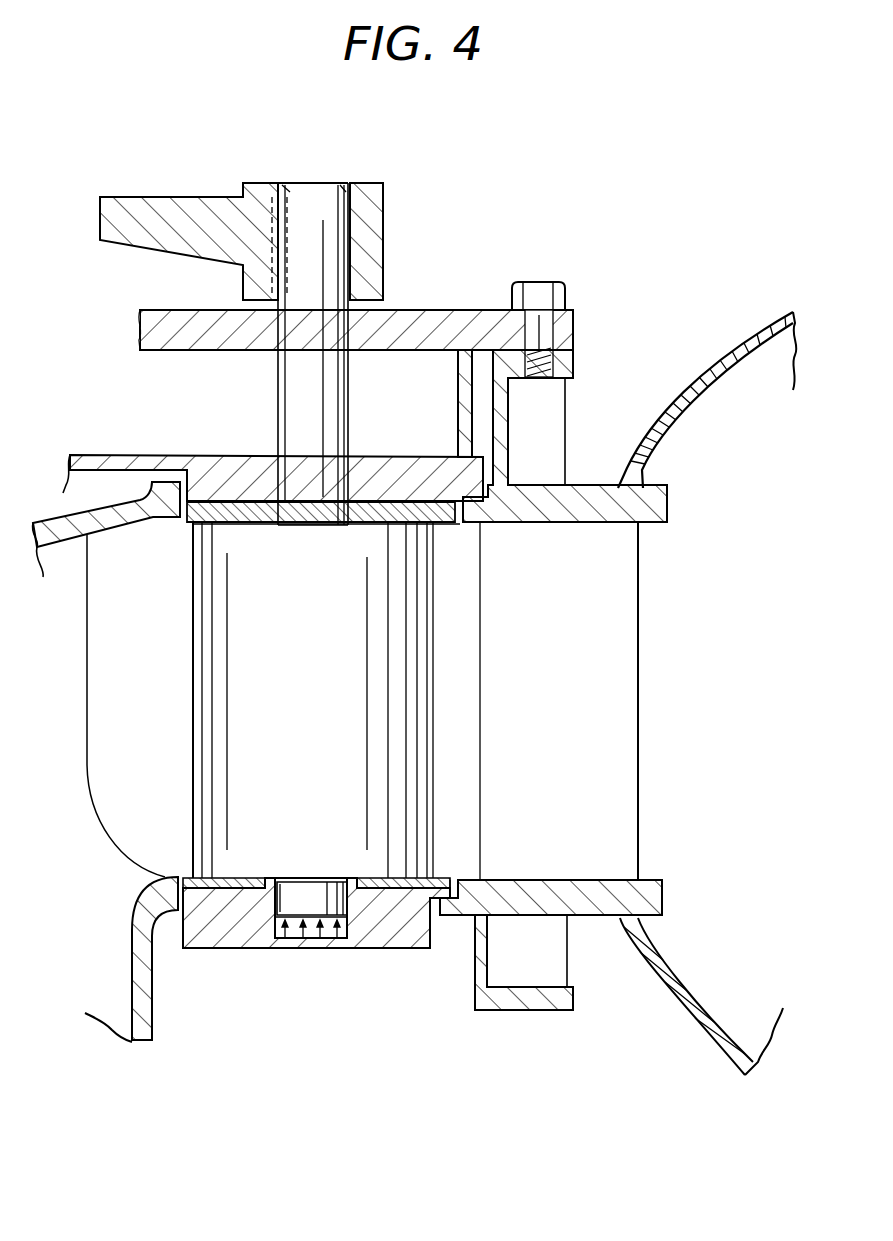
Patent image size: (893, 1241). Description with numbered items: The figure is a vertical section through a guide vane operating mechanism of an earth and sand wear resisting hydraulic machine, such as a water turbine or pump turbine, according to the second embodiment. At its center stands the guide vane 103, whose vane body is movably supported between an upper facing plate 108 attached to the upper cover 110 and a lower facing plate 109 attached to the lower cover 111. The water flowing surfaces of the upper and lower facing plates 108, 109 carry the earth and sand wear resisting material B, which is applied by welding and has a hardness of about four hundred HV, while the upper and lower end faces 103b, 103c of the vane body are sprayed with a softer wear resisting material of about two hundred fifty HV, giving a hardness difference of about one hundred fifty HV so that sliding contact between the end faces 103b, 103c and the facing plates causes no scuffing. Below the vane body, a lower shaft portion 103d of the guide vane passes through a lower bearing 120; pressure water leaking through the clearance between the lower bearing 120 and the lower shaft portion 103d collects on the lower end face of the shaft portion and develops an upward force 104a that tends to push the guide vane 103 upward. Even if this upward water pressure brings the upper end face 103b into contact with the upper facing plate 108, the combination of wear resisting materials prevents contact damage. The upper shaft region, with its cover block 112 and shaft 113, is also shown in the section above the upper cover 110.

The guide vane 103 is at (440, 708).
The upper end face of the vane body 103b is at (226, 510).
The lower end face of the vane body 103c is at (224, 892).
The lower shaft portion 103d is at (297, 930).
The force 104a is at (310, 933).
The upper facing plate 108 is at (472, 308).
The lower facing plate 109 is at (247, 948).
The upper cover 110 is at (190, 518).
The lower cover 111 is at (190, 877).
The upper cover block 112 is at (384, 235).
The shaft 113 is at (288, 218).
The lower bearing 120 is at (358, 917).
The earth and sand wear resisting material B is at (443, 878).